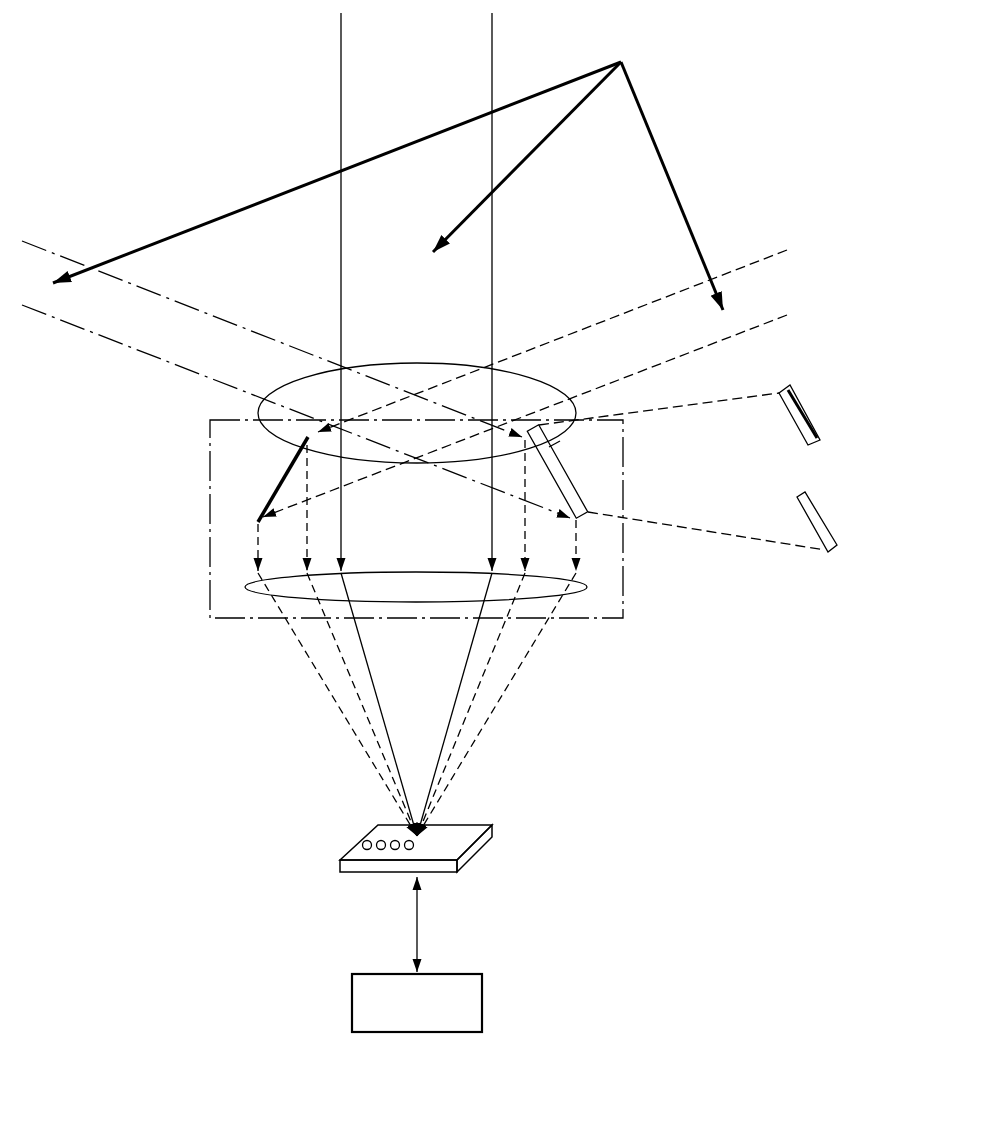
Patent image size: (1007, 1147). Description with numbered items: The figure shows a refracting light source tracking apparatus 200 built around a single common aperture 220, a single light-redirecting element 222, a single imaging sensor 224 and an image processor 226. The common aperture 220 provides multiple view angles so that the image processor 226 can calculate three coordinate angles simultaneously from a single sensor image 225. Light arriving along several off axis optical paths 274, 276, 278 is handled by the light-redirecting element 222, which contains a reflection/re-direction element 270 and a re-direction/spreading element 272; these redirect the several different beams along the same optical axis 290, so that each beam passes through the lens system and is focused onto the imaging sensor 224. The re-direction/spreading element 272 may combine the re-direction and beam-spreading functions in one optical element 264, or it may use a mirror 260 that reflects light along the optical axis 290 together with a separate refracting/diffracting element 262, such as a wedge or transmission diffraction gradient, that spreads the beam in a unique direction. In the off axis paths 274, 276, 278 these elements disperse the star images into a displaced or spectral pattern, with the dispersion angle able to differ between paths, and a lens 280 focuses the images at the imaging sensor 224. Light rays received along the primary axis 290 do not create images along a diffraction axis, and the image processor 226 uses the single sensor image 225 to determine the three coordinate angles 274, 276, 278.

The refracting light source tracking apparatus 200 is at (116, 86).
The optical axis 290 is at (341, 100).
The off axis optical path/angle 274 is at (198, 223).
The off axis optical path/angle 276 is at (531, 154).
The off axis optical path/angle 278 is at (673, 185).
The common aperture 220 is at (577, 413).
The light-redirecting element 222 is at (624, 494).
The reflection/re-direction element 270 is at (283, 478).
The re-direction/spreading element 272 is at (563, 468).
The lens 280 is at (414, 571).
The mirror 260 is at (781, 402).
The refracting/diffracting element 262 is at (823, 382).
The optical element 264 is at (803, 504).
The imaging sensor 224 is at (444, 866).
The sensor image 225 is at (380, 851).
The image processor 226 is at (483, 1002).